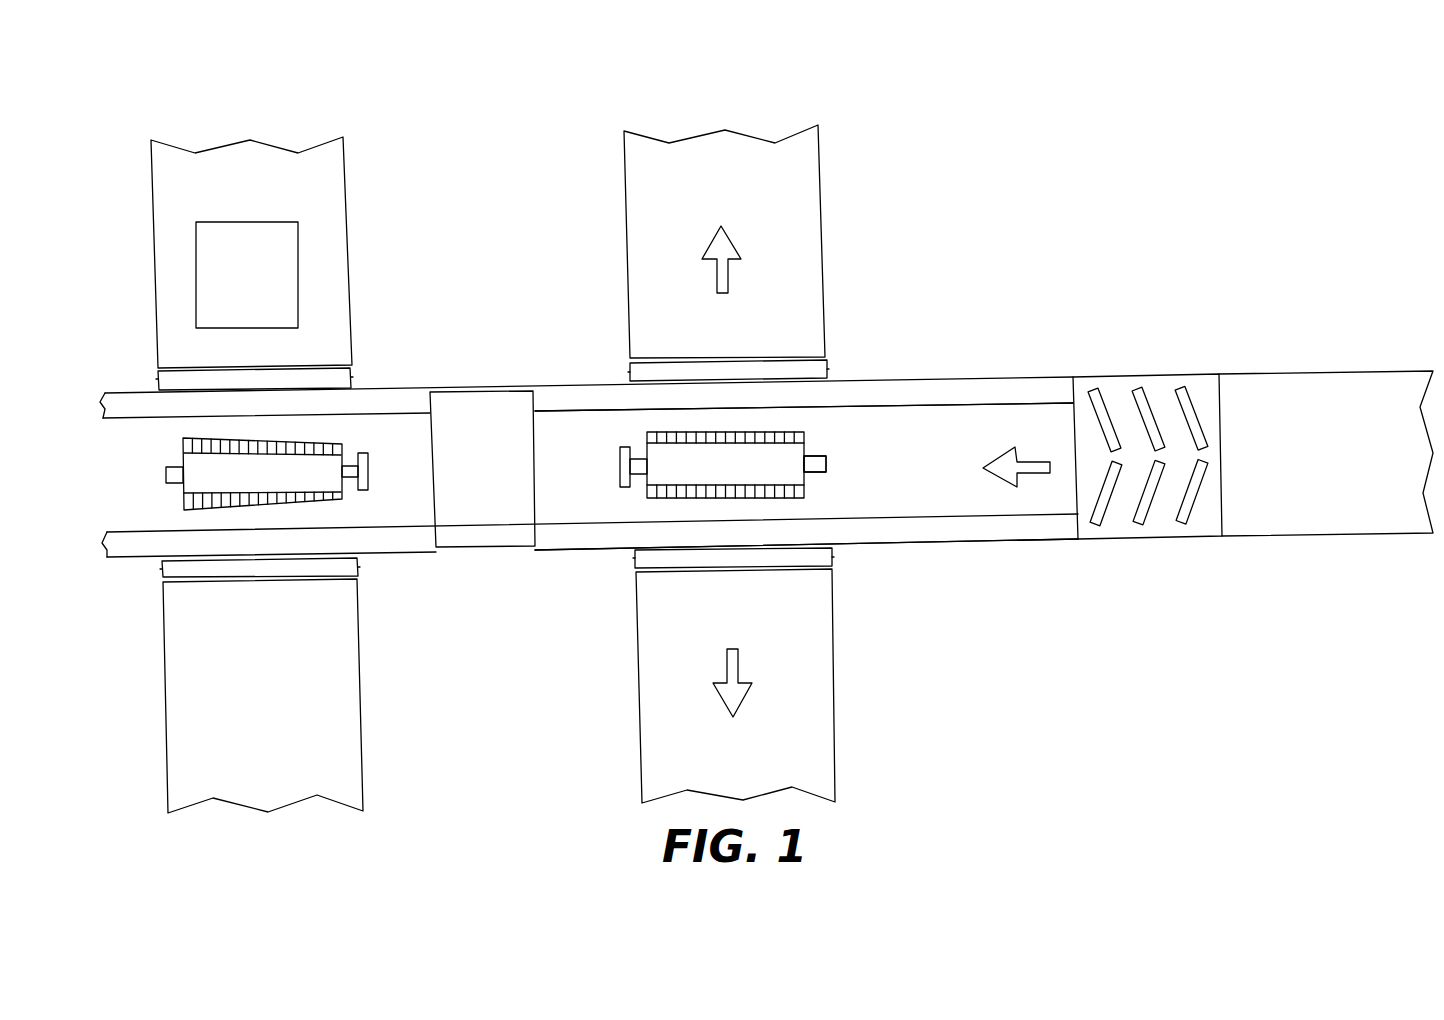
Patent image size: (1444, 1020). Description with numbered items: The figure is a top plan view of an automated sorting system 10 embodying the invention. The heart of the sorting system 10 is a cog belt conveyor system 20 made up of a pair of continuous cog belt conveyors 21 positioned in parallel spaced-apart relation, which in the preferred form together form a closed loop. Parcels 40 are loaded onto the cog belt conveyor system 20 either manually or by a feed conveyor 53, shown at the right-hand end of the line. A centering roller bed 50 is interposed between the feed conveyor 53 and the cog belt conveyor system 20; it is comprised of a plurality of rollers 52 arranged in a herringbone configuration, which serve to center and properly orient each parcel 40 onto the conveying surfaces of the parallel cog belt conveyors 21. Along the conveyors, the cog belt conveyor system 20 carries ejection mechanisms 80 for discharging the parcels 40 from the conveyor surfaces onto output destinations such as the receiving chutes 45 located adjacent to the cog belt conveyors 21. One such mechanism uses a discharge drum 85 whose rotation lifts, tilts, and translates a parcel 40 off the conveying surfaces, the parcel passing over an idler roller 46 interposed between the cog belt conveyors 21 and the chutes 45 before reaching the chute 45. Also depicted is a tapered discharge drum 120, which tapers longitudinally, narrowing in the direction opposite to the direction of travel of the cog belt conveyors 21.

The sorting system 10 is at (972, 158).
The cog belt conveyor system 20 is at (998, 377).
The cog belt conveyors 21 is at (1053, 385).
The parcels 40 is at (257, 293).
The receiving chutes 45 is at (360, 682).
The idler roller 46 is at (633, 560).
The centering roller bed 50 is at (1168, 374).
The rollers 52 is at (1187, 518).
The feed conveyor 53 is at (1268, 371).
The ejection mechanisms 80 is at (828, 443).
The discharge drum 85 is at (733, 478).
The tapered discharge drum 120 is at (270, 486).